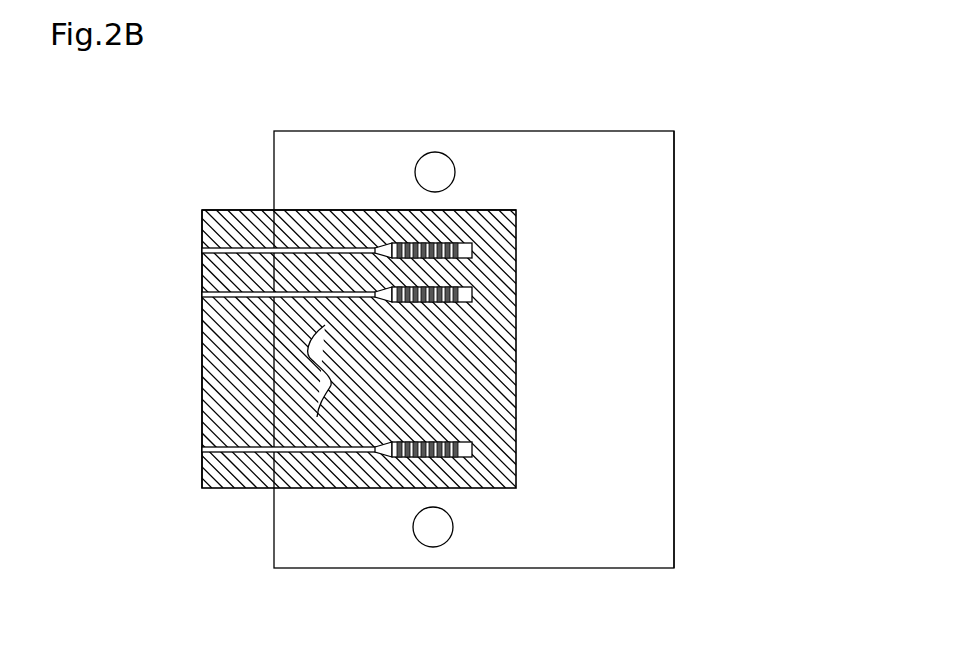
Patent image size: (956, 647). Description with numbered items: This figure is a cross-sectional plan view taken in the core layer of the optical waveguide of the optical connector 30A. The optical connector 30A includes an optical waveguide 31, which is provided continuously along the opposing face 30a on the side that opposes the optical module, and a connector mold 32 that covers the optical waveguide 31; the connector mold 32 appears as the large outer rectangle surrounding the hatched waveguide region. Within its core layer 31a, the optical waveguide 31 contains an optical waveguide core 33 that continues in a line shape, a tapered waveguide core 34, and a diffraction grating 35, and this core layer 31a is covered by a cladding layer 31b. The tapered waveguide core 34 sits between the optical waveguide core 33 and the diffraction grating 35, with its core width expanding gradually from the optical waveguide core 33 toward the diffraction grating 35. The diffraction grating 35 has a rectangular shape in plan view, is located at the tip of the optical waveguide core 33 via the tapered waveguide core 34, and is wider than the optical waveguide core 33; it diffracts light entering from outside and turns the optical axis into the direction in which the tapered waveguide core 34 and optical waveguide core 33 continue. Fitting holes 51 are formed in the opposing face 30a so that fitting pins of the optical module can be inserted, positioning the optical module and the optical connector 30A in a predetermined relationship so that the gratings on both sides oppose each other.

The optical connector 30A is at (403, 354).
The opposing face 30a is at (660, 183).
The optical waveguide 31 is at (243, 210).
The core layer 31a is at (223, 253).
The cladding layer 31b is at (202, 222).
The connector mold 32 is at (556, 158).
The optical waveguide core 33 is at (288, 246).
The tapered waveguide core 34 is at (377, 248).
The diffraction grating 35 is at (462, 245).
The fitting hole 51 is at (415, 173).